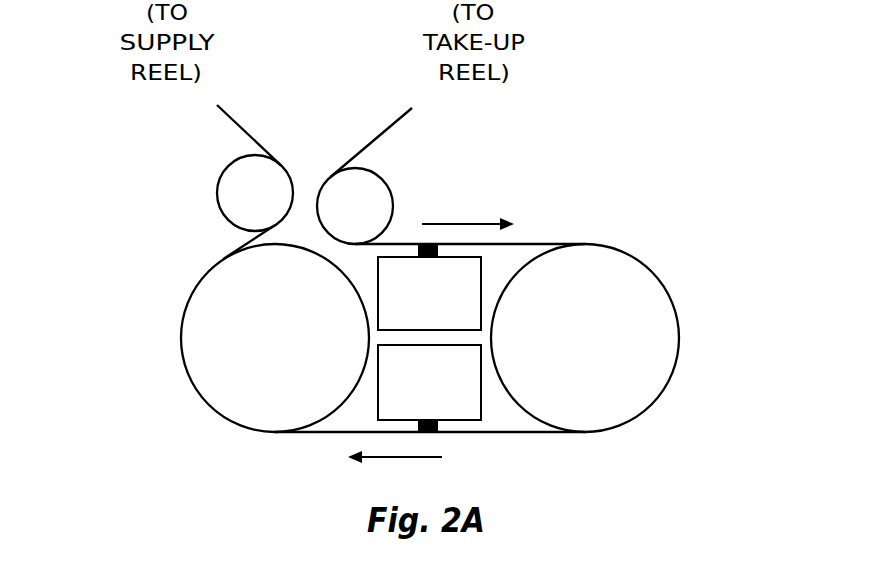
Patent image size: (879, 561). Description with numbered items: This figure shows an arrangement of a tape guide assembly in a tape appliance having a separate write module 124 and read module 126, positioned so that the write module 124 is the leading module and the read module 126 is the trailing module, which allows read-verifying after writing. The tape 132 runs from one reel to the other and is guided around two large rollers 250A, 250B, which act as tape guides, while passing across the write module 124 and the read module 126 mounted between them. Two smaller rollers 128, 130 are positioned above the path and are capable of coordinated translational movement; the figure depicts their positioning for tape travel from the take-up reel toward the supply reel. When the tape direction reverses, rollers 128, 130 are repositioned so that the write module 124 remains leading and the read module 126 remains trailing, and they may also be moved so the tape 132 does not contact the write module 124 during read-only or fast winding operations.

The write module 124 is at (478, 327).
The read module 126 is at (478, 414).
The roller 128 is at (217, 194).
The roller 130 is at (383, 178).
The tape 132 is at (239, 126).
The roller 250A is at (183, 318).
The roller 250B is at (673, 368).